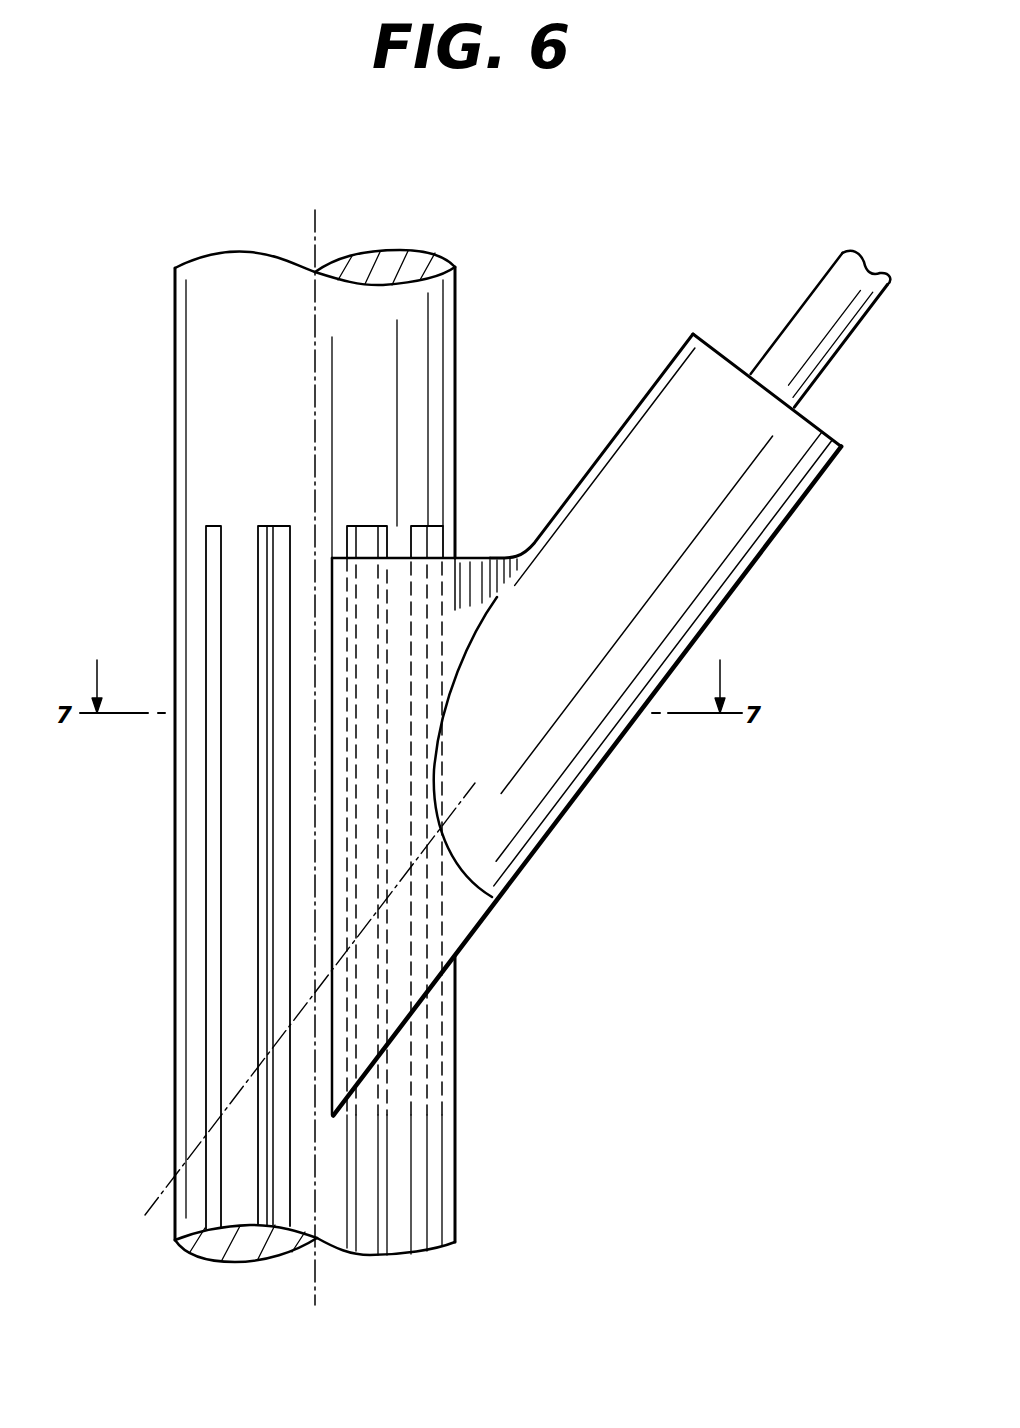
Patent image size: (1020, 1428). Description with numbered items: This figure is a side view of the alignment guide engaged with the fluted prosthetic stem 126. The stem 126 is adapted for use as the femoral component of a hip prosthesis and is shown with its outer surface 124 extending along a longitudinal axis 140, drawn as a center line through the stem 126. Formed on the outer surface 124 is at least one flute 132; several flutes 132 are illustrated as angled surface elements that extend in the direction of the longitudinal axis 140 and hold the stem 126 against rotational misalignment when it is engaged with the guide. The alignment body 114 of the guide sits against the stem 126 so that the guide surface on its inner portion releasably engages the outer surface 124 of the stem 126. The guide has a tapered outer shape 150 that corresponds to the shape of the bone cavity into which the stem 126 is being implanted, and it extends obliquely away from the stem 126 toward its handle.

The alignment body 114 is at (435, 928).
The outer surface 124 is at (200, 395).
The prosthetic stem 126 is at (542, 284).
The flute 132 is at (258, 568).
The longitudinal axis 140 is at (310, 226).
The tapered outer shape 150 is at (735, 585).